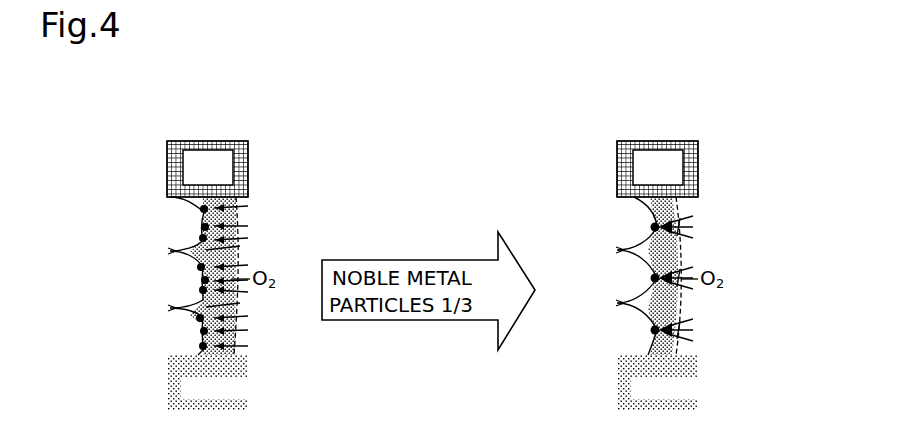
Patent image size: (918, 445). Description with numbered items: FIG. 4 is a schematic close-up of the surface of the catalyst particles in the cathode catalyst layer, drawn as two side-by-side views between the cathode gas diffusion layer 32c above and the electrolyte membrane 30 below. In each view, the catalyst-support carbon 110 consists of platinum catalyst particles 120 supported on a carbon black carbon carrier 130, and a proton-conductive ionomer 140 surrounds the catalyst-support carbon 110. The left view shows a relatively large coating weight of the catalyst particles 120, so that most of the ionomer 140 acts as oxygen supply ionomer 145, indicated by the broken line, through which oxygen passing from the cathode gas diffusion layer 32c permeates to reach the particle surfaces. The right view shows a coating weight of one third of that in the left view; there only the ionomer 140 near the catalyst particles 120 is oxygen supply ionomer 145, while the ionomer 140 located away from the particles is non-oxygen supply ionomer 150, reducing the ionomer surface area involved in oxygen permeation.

The electrolyte membrane 30 is at (168, 392).
The cathode gas diffusion layer 32c is at (165, 171).
The catalyst-support carbon 110 is at (368, 276).
The catalyst particles 120 is at (200, 239).
The carbon carrier 130 is at (180, 216).
The ionomer 140 is at (760, 167).
The oxygen supply ionomer 145 is at (237, 212).
The non-oxygen supply ionomer 150 is at (672, 206).